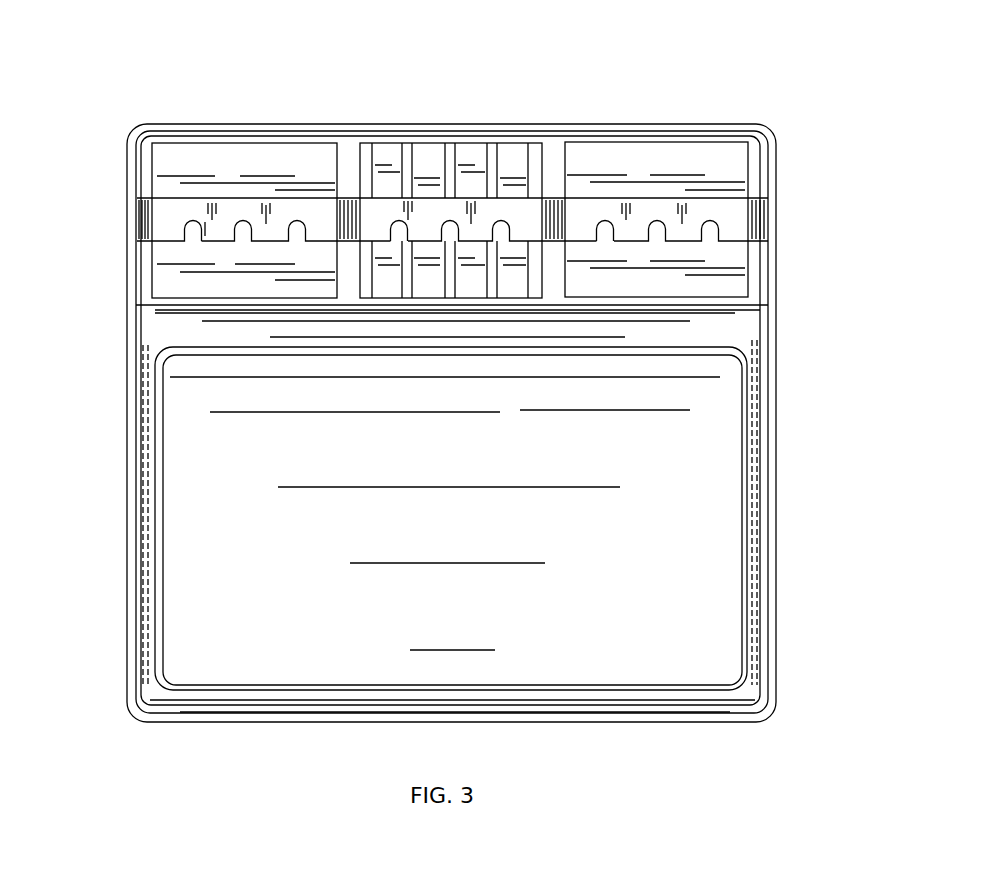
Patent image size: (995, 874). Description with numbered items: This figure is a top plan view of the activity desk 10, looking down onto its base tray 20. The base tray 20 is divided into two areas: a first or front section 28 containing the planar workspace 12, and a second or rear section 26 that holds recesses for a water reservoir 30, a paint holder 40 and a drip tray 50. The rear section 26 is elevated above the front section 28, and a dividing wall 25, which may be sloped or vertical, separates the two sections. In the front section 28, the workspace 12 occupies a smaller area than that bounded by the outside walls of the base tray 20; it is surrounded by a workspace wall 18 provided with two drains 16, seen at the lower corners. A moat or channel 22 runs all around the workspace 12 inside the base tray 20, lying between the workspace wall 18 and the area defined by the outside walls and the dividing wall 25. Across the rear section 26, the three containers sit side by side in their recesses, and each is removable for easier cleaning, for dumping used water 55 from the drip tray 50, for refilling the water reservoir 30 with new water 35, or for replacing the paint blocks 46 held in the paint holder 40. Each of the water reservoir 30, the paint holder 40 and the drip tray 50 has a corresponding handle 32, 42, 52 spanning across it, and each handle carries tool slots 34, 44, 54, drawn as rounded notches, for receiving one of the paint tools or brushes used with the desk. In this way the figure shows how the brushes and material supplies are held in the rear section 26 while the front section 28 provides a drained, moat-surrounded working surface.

The activity desk 10 is at (760, 110).
The planar workspace 12 is at (429, 457).
The drains 16 is at (130, 690).
The workspace wall 18 is at (155, 398).
The base tray 20 is at (135, 293).
The moat or channel 22 is at (152, 510).
The dividing wall 25 is at (697, 335).
The rear section 26 is at (180, 118).
The front section 28 is at (124, 612).
The water reservoir 30 is at (215, 143).
The handle 32 is at (301, 222).
The tool slot 34 is at (183, 233).
The new water 35 is at (240, 171).
The paint holder 40 is at (520, 143).
The handle 42 is at (503, 222).
The tool slot 44 is at (398, 222).
The paint blocks 46 is at (507, 147).
The drip tray 50 is at (703, 142).
The handle 52 is at (713, 221).
The tool slot 54 is at (605, 221).
The used water 55 is at (653, 171).